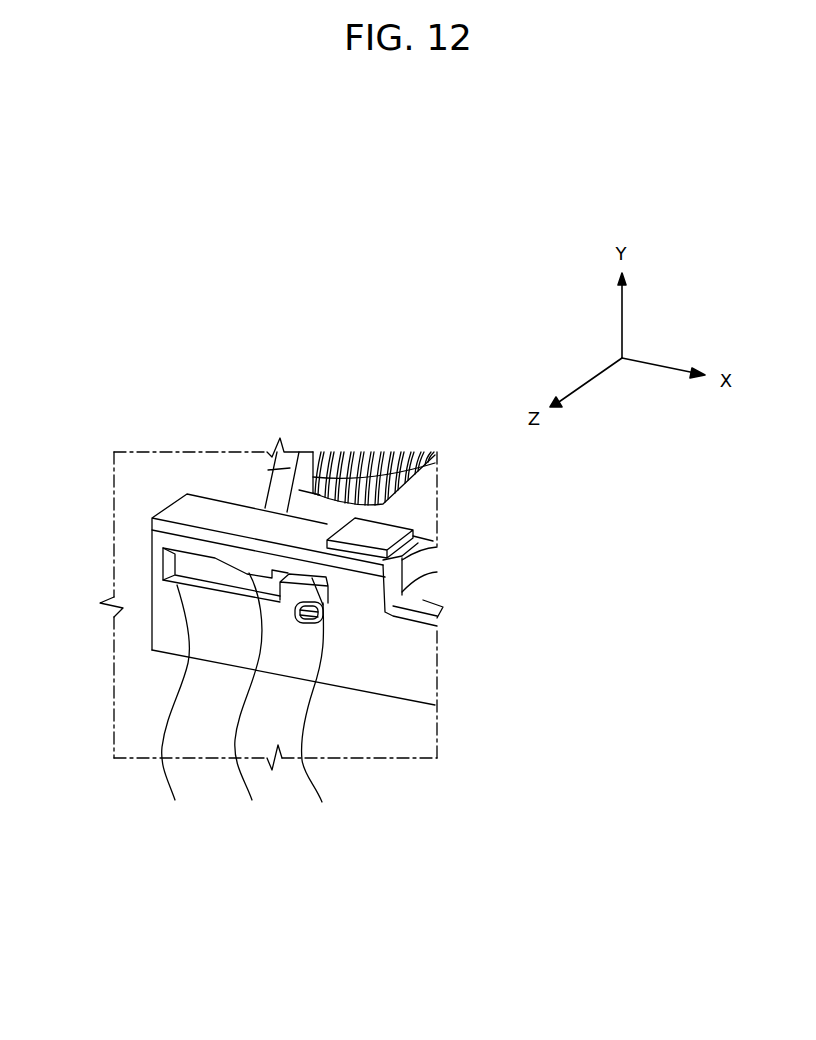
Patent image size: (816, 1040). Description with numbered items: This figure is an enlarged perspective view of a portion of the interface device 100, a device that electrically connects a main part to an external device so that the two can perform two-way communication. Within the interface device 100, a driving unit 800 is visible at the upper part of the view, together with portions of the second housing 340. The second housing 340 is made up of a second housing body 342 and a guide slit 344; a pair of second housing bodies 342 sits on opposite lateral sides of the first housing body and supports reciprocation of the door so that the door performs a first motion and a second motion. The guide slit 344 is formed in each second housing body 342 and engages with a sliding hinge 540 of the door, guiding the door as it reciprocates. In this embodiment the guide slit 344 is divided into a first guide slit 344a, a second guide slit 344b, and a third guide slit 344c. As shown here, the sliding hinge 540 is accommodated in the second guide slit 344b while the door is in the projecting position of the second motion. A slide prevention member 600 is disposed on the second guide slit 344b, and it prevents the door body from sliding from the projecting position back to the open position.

The interface device 100 is at (170, 374).
The driving unit 800 is at (357, 452).
The sliding hinge 540 is at (275, 596).
The slide prevention member 600 is at (328, 604).
The second housing 340 is at (293, 741).
The second housing body 342 is at (387, 675).
The guide slit 344 is at (249, 720).
The first guide slit 344a is at (176, 705).
The second guide slit 344b is at (321, 714).
The third guide slit 344c is at (251, 699).